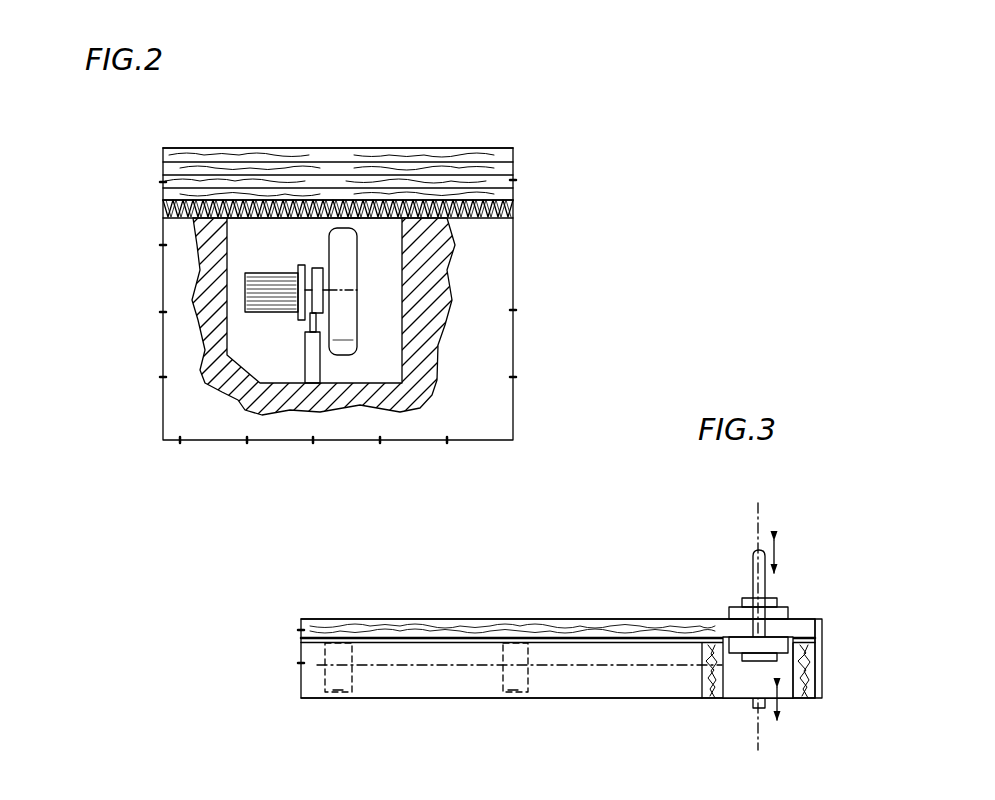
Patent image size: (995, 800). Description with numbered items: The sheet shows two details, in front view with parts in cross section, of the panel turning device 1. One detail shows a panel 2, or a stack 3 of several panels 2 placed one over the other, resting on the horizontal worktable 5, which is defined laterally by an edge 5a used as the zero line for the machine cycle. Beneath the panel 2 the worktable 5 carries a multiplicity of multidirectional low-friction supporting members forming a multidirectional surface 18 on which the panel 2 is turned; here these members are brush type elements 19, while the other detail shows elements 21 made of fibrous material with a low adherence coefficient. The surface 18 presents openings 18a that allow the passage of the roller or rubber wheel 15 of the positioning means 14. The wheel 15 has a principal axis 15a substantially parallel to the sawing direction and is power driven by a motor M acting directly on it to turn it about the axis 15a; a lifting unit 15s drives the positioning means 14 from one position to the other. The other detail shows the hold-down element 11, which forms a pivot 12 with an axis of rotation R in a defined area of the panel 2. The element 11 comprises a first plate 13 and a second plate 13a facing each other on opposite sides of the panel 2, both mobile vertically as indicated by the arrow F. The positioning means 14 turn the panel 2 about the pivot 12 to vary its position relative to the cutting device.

In FIG. 3, the panel turning device 1 is at (788, 593).
In FIG. 2, the panel 2 is at (184, 168).
In FIG. 3, the panel 2 is at (542, 632).
In FIG. 2, the stack 3 is at (442, 128).
In FIG. 2, the horizontal worktable 5 is at (412, 232).
In FIG. 3, the horizontal worktable 5 is at (320, 637).
In FIG. 3, the edge 5a is at (824, 655).
In FIG. 3, the hold-down element 11 is at (736, 582).
In FIG. 3, the pivot 12 is at (803, 605).
In FIG. 3, the first plate 13 is at (737, 598).
In FIG. 3, the second plate 13a is at (740, 645).
In FIG. 2, the positioning means 14 is at (362, 322).
In FIG. 3, the positioning means 14 is at (354, 684).
In FIG. 2, the roller or rubber wheel 15 is at (347, 343).
In FIG. 3, the roller or rubber wheel 15 is at (337, 684).
In FIG. 2, the principal axis 15a is at (343, 290).
In FIG. 3, the principal axis 15a is at (423, 663).
In FIG. 2, the lifting unit 15s is at (297, 366).
In FIG. 2, the multidirectional surface 18 is at (509, 208).
In FIG. 3, the multidirectional surface 18 is at (370, 636).
In FIG. 2, the openings 18a is at (350, 217).
In FIG. 2, the brush type elements 19 is at (236, 211).
In FIG. 3, the elements made of fibrous material 21 is at (300, 639).
In FIG. 2, the motor M is at (243, 287).
In FIG. 3, the axis of rotation R is at (757, 523).
In FIG. 3, the arrow F is at (778, 557).